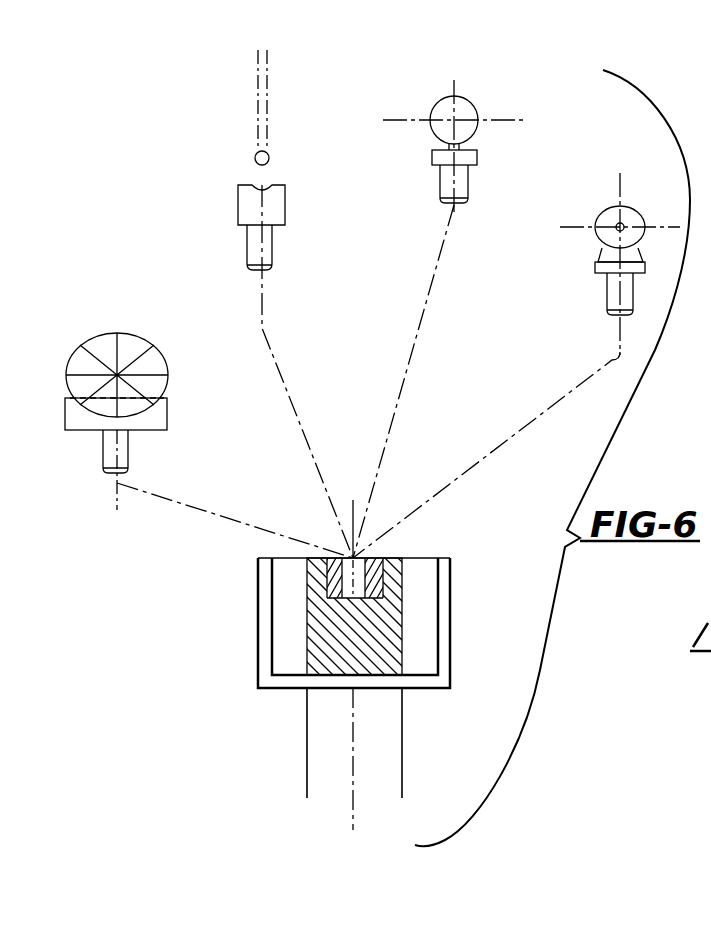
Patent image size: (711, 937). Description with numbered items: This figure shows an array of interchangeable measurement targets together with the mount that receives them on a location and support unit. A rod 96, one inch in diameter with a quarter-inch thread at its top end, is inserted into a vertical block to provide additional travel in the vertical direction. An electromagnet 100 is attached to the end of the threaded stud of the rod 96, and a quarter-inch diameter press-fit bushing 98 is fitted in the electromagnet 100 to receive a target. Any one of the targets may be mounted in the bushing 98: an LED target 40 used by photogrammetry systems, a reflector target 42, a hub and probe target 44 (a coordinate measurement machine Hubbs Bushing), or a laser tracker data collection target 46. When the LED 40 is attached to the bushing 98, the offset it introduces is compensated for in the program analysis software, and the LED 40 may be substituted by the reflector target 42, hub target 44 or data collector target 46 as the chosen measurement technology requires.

The LED target 40 is at (604, 199).
The reflector target 42 is at (433, 102).
The hub and probe target 44 is at (235, 201).
The laser tracker/system data collection target 46 is at (147, 336).
The rod 96 is at (318, 748).
The press-fit bushing 98 is at (377, 556).
The electromagnet 100 is at (450, 600).